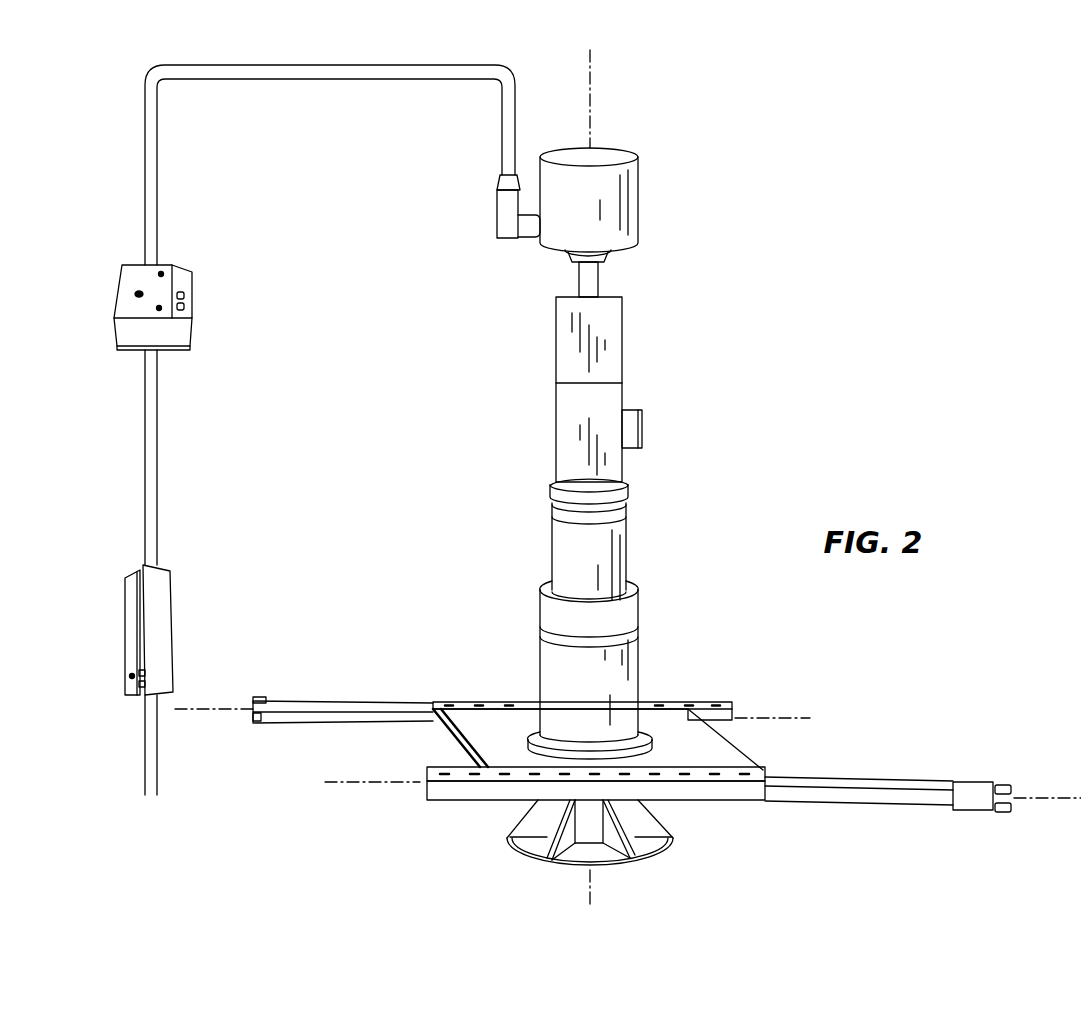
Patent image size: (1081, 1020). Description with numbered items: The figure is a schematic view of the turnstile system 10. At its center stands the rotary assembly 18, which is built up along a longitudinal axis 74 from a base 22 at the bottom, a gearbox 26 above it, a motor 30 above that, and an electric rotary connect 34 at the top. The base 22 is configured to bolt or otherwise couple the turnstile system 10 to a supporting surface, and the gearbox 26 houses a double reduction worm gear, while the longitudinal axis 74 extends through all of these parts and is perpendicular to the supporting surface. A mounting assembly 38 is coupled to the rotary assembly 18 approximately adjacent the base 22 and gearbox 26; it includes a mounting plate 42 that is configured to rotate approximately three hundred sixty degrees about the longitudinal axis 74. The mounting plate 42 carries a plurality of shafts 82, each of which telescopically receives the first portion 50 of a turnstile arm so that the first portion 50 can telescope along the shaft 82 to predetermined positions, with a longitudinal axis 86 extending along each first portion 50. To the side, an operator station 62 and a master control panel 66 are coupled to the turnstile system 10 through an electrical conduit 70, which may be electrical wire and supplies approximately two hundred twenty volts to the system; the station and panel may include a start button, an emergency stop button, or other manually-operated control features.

The turnstile system 10 is at (851, 204).
The rotary assembly 18 is at (662, 302).
The base 22 is at (655, 825).
The gearbox 26 is at (622, 552).
The motor 30 is at (612, 365).
The electric rotary connect 34 is at (640, 183).
The mounting assembly 38 is at (714, 651).
The mounting plate 42 is at (725, 758).
The first portion 50 is at (357, 700).
The operator station 62 is at (176, 271).
The master control panel 66 is at (132, 618).
The electrical conduit 70 is at (316, 73).
The longitudinal axis 74 is at (590, 105).
The shaft 82 is at (735, 705).
The longitudinal axis 86 is at (222, 710).